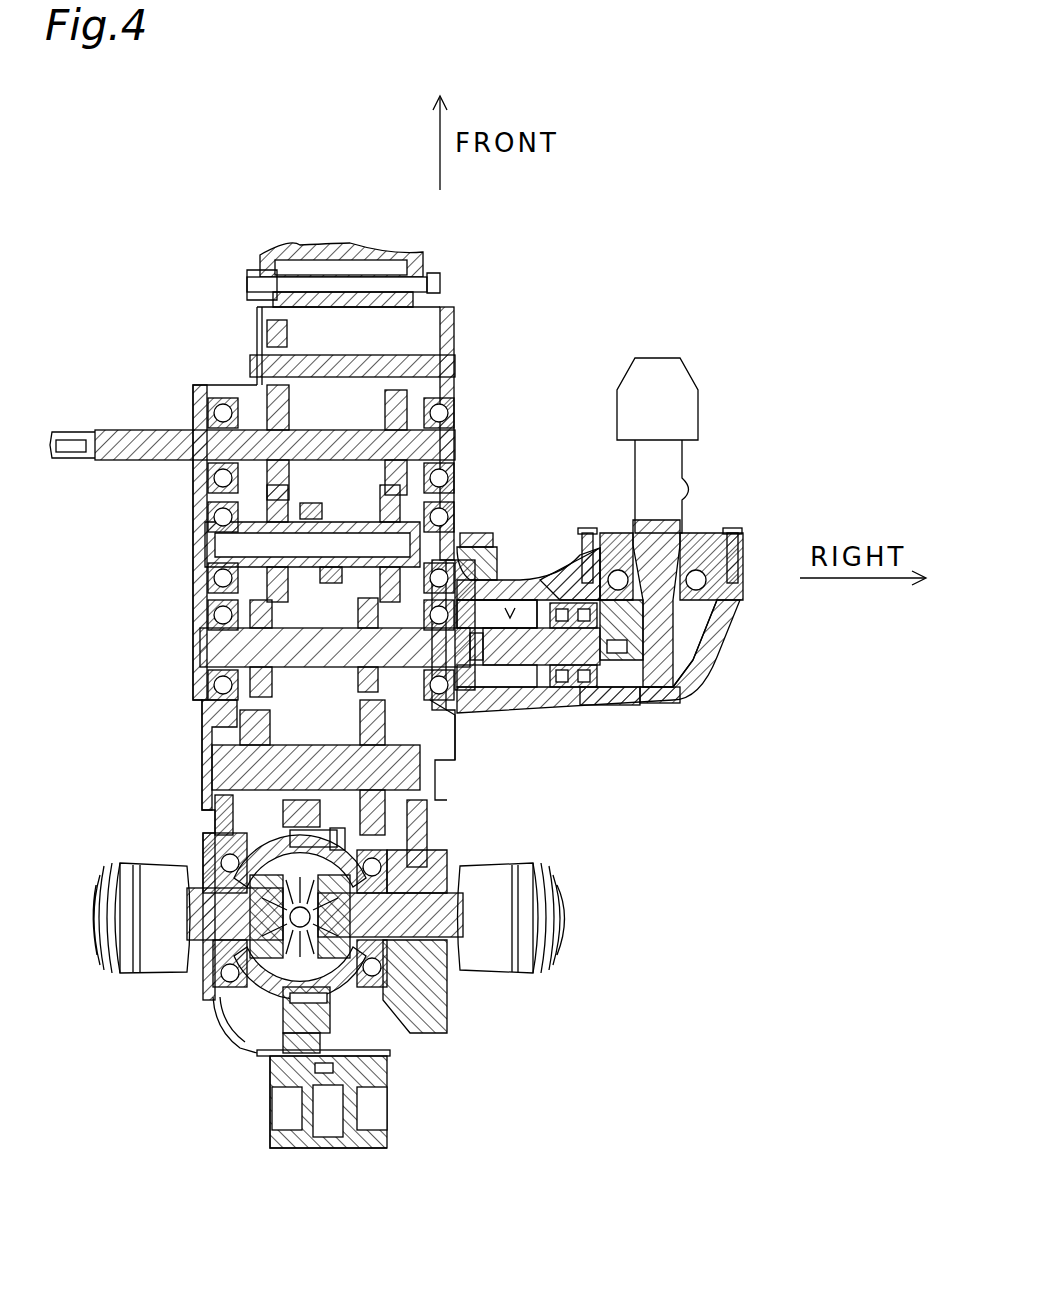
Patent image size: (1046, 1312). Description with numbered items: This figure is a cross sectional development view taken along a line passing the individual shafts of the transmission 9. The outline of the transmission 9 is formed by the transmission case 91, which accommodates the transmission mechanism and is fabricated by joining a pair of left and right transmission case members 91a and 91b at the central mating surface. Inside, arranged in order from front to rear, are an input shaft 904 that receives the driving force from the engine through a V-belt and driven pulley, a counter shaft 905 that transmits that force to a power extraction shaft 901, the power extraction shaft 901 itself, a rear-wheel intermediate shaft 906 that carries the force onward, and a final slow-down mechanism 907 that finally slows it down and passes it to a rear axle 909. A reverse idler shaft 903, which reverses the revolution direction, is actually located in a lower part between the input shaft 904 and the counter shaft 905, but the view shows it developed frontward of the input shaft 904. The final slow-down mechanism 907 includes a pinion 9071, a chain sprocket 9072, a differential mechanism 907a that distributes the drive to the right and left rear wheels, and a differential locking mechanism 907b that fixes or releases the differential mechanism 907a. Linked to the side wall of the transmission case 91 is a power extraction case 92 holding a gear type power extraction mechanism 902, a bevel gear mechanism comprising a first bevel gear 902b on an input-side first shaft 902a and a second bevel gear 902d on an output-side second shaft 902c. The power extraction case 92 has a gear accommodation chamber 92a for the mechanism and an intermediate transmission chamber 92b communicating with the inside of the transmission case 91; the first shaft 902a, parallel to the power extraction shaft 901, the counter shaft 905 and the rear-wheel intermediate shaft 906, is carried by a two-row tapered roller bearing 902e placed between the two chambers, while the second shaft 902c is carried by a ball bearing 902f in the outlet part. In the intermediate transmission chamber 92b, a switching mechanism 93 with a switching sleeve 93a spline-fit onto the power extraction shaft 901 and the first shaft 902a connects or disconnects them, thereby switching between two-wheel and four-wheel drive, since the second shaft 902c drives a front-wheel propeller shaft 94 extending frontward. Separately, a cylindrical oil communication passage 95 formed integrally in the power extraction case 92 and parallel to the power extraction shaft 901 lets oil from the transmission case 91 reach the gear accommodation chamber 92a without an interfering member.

The transmission 9 is at (455, 1158).
The transmission case 91 is at (445, 710).
The transmission case member 91a is at (352, 1150).
The transmission case member 91b is at (296, 1150).
The power extraction case 92 is at (700, 700).
The gear accommodation chamber 92a is at (695, 648).
The intermediate transmission chamber 92b is at (505, 680).
The switching mechanism 93 is at (586, 418).
The switching sleeve 93a is at (512, 608).
The front-wheel propeller shaft 94 is at (662, 402).
The oil communication passage 95 is at (478, 567).
The power extraction shaft 901 is at (225, 647).
The gear type power extraction mechanism 902 is at (708, 870).
The first shaft 902a is at (585, 712).
The first bevel gear 902b is at (628, 700).
The second shaft 902c is at (745, 600).
The second bevel gear 902d is at (710, 625).
The tapered roller bearing 902e is at (590, 612).
The ball bearing 902f is at (700, 548).
The reverse idler shaft 903 is at (262, 366).
The input shaft 904 is at (130, 440).
The counter shaft 905 is at (210, 545).
The rear-wheel intermediate shaft 906 is at (215, 750).
The final slow-down mechanism 907 is at (240, 828).
The differential mechanism 907a is at (238, 962).
The differential locking mechanism 907b is at (408, 1005).
The pinion 9071 is at (207, 788).
The chain sprocket 9072 is at (280, 1050).
The rear axle 909 is at (530, 920).